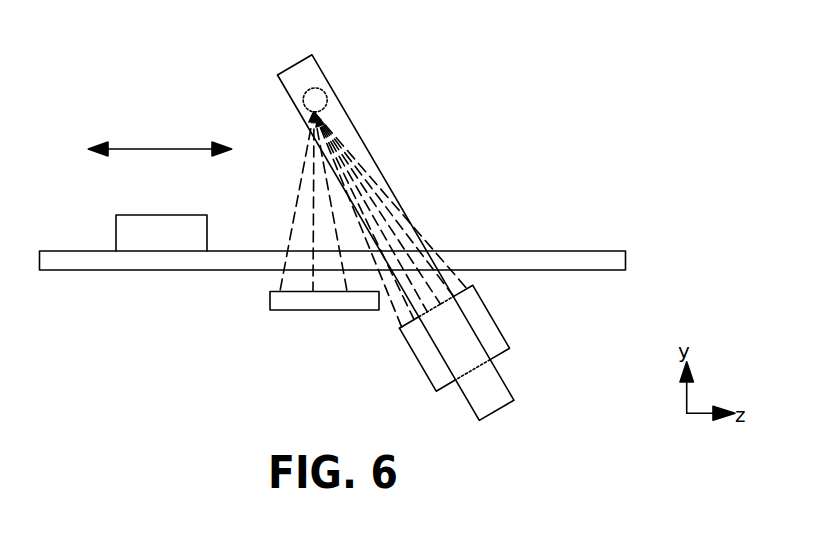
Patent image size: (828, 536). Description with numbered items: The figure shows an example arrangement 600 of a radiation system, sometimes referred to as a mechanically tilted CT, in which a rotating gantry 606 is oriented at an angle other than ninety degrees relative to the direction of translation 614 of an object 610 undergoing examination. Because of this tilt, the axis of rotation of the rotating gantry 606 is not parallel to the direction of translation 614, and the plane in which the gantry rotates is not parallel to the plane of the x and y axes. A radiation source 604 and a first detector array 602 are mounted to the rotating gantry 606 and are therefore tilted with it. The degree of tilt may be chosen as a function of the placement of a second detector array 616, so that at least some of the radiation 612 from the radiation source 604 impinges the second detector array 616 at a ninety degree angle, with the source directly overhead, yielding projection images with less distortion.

The arrangement 600 is at (533, 40).
The first detector array 602 is at (486, 332).
The radiation source 604 is at (316, 100).
The rotating gantry 606 is at (305, 75).
The object 610 is at (162, 231).
The radiation 612 is at (298, 203).
The direction of translation 614 is at (163, 148).
The second detector array 616 is at (334, 298).